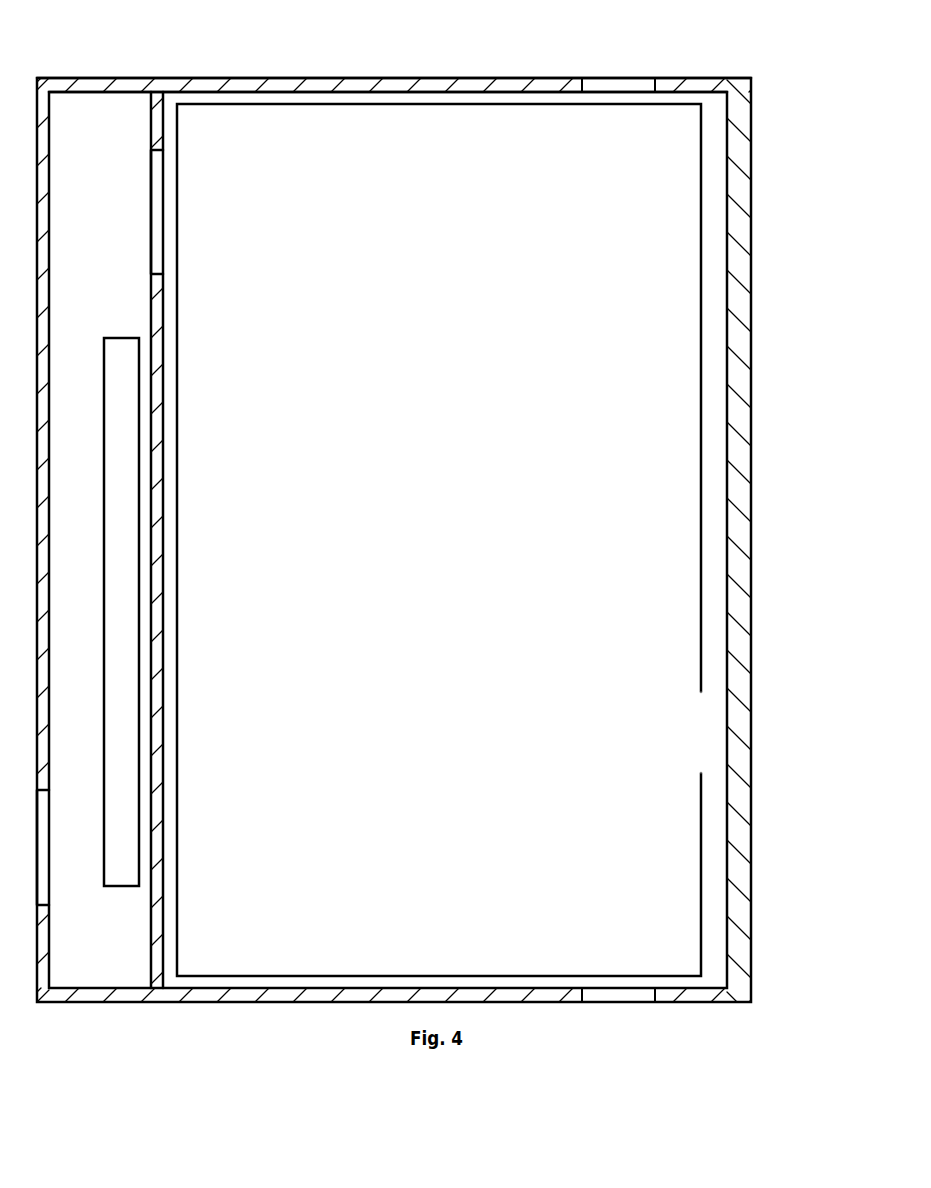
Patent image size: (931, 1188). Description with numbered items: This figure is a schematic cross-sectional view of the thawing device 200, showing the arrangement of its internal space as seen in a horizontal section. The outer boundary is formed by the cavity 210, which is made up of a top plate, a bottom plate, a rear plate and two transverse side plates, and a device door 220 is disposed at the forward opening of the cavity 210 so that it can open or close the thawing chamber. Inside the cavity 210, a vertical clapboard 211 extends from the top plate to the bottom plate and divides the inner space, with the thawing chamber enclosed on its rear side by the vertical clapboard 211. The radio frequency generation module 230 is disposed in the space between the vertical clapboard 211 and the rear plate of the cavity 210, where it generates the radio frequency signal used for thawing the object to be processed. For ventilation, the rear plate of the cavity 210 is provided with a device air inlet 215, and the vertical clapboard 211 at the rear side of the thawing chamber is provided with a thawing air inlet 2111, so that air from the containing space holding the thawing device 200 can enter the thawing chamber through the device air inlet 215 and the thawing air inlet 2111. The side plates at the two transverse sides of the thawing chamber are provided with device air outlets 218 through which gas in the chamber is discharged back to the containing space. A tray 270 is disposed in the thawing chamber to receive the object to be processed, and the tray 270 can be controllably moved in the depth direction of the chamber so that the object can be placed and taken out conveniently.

The thawing device 200 is at (73, 40).
The cavity 210 is at (370, 81).
The vertical clapboard 211 is at (157, 350).
The thawing air inlet 2111 is at (155, 222).
The device air inlet 215 is at (42, 876).
The device air outlet 218 is at (621, 86).
The device door 220 is at (738, 553).
The radio frequency generation module 230 is at (122, 554).
The tray 270 is at (667, 753).